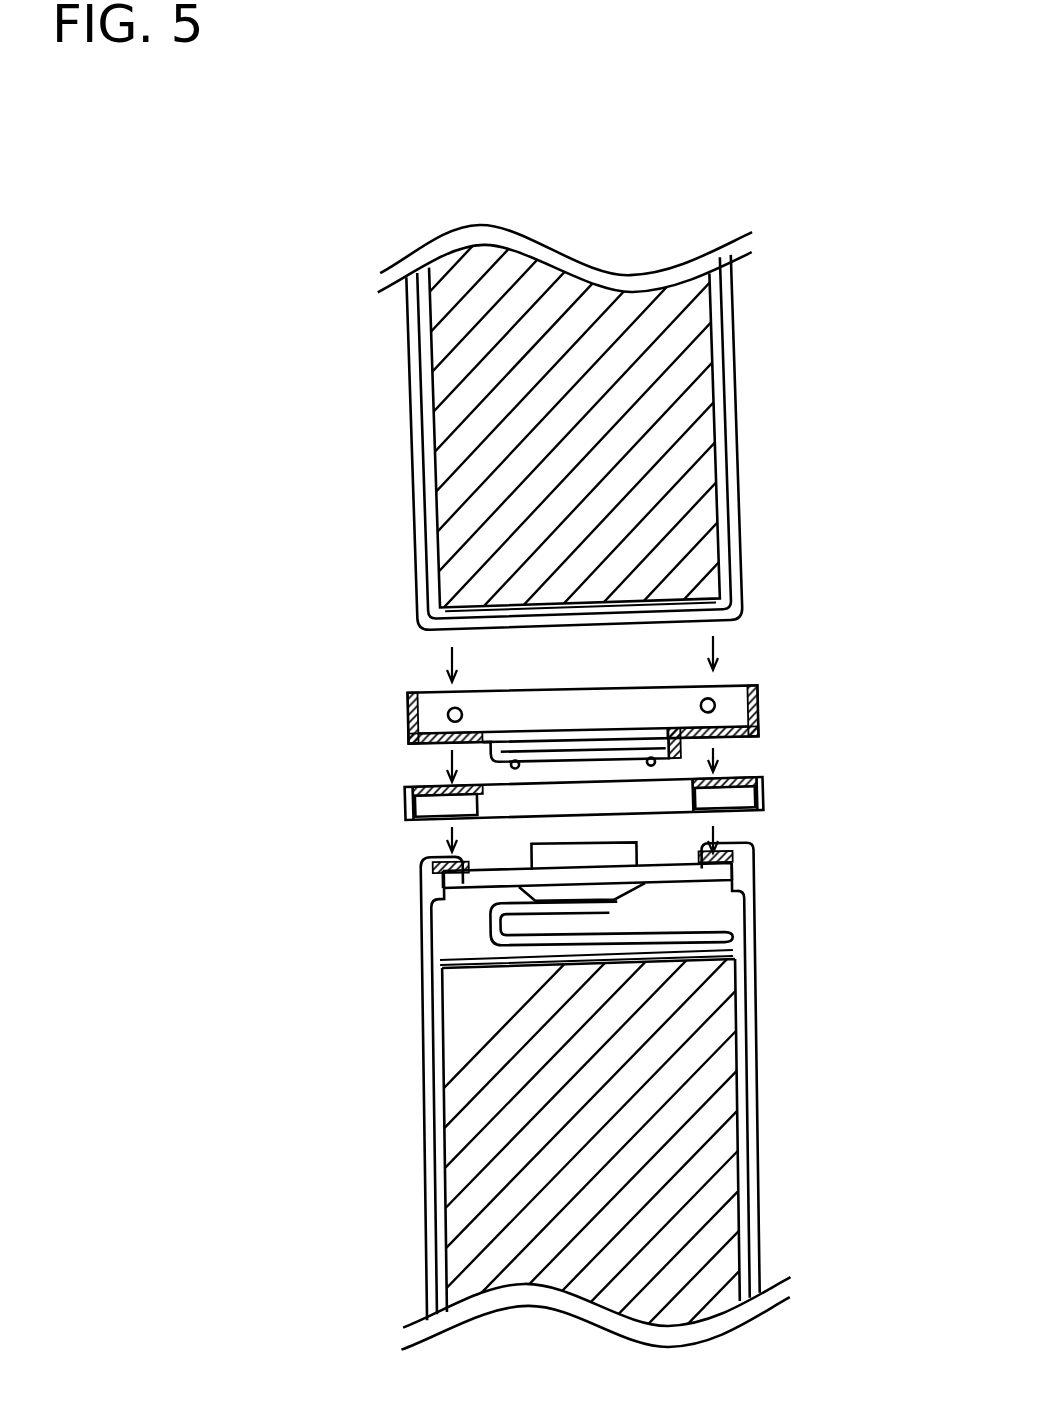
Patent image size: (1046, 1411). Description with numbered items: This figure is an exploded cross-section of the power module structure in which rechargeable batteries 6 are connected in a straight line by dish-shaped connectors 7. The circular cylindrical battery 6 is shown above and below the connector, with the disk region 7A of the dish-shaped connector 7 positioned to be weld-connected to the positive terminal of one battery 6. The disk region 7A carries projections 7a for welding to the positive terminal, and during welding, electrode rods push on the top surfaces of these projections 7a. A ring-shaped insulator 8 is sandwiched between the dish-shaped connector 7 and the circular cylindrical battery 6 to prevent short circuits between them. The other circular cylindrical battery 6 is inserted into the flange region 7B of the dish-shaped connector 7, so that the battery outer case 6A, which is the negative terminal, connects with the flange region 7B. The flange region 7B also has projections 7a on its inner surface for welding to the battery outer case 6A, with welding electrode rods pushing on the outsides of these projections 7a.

The rechargeable battery 6 is at (523, 742).
The outer case 6A is at (740, 497).
The dish-shaped connector 7 is at (603, 707).
The disk region 7A is at (808, 876).
The projections 7a is at (454, 707).
The flange region 7B is at (762, 706).
The ring-shaped insulator 8 is at (766, 791).